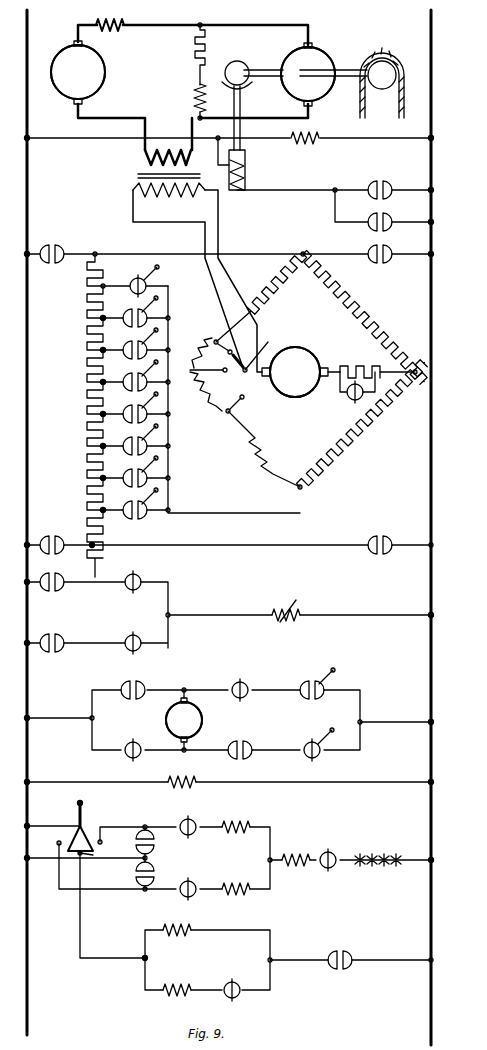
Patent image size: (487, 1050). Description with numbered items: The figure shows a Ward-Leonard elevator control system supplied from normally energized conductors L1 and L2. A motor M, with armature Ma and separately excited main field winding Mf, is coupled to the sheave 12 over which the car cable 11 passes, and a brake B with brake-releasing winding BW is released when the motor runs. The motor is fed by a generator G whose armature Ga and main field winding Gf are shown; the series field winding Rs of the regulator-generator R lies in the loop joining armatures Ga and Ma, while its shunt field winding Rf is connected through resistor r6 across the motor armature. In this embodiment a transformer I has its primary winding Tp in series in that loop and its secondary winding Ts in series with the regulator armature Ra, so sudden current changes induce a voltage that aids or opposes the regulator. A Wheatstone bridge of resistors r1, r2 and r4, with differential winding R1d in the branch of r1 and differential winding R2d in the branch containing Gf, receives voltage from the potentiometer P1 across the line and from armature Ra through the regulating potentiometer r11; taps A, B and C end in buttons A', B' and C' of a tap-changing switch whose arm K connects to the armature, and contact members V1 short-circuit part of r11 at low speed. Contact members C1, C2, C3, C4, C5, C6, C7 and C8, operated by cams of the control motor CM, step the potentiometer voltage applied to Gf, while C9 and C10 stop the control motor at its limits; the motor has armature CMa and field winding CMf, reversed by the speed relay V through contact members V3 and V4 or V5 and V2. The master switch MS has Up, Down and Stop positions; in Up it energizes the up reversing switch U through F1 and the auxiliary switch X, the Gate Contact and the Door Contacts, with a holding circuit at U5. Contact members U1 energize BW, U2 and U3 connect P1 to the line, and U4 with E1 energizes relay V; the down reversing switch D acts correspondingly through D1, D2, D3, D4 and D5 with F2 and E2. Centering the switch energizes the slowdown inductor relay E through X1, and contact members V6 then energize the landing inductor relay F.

The energized conductor L1 is at (30, 32).
The energized conductor L2 is at (428, 30).
The generator G is at (117, 62).
The generator armature Ga is at (58, 64).
The series field winding Rs is at (120, 26).
The resistor r6 is at (205, 58).
The shunt-type field winding Rf is at (190, 101).
The motor M is at (335, 46).
The motor armature Ma is at (332, 66).
The brake B is at (244, 105).
The brake-releasing winding BW is at (240, 182).
The sheave 12 is at (382, 90).
The cable 11 is at (404, 102).
The main field winding Mf is at (310, 134).
The primary winding Tp is at (140, 155).
The transformer I is at (118, 184).
The secondary winding Ts is at (168, 204).
The contact members U1 is at (386, 186).
The down relay contact D1 is at (386, 218).
The contact members U2 is at (60, 251).
The down relay contact D2 is at (386, 251).
The potentiometer P1 is at (86, 408).
The contact members C1 is at (130, 282).
The contact members C2 is at (126, 315).
The contact members C3 is at (126, 347).
The contact members C4 is at (126, 379).
The contact members C5 is at (126, 411).
The contact members C6 is at (126, 443).
The contact members C7 is at (126, 475).
The contact members C8 is at (126, 507).
The resistor r1 is at (268, 280).
The resistor r2 is at (350, 296).
The resistor r4 is at (366, 437).
The regulator-generator armature Ra is at (310, 350).
The regulator-generator R is at (299, 416).
The regulating potentiometer r11 is at (356, 364).
The contact members V1 is at (352, 400).
The tap A is at (219, 331).
The button A' is at (230, 351).
The operating arm K is at (260, 348).
The button B' is at (218, 378).
The differential field winding R1d is at (195, 352).
The differential field winding R2d is at (199, 400).
The tap C is at (224, 420).
The button C' is at (243, 404).
The main field winding Gf is at (266, 474).
The down relay contact D3 is at (62, 541).
The contact members U3 is at (386, 543).
The contact members U4 is at (58, 578).
The contact members E1 is at (140, 578).
The down relay contact D4 is at (58, 638).
The contact members E2 is at (140, 639).
The speed relay V is at (289, 605).
The contact members V3 is at (140, 686).
The contact members V2 is at (245, 686).
The contact members C9 is at (310, 684).
The control motor CM is at (160, 714).
The control motor armature CMa is at (200, 724).
The contact members V5 is at (148, 742).
The contact members V4 is at (248, 746).
The contact members C10 is at (314, 744).
The field winding CMf is at (180, 780).
The master switch MS is at (70, 814).
The down position Down is at (57, 837).
The up contacts Up is at (108, 837).
The stop contacts Stop is at (100, 853).
The contact members U5 is at (156, 844).
The down relay contact D5 is at (154, 875).
The contact members F1 is at (192, 822).
The up reversing switch U is at (244, 822).
The contact members F2 is at (192, 885).
The down reversing switch D is at (238, 884).
The auxiliary switch X is at (296, 852).
The gate contact Gate Contact is at (342, 849).
The door contacts Door Contacts is at (363, 871).
The slowdown inductor relay E is at (184, 926).
The landing inductor relay F is at (184, 986).
The contact members V6 is at (238, 984).
The contact members X1 is at (346, 954).